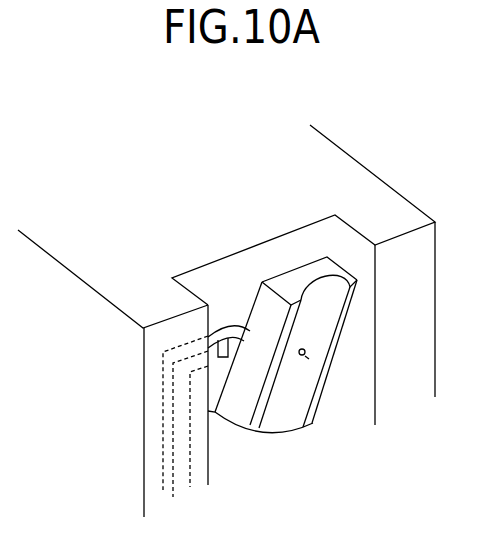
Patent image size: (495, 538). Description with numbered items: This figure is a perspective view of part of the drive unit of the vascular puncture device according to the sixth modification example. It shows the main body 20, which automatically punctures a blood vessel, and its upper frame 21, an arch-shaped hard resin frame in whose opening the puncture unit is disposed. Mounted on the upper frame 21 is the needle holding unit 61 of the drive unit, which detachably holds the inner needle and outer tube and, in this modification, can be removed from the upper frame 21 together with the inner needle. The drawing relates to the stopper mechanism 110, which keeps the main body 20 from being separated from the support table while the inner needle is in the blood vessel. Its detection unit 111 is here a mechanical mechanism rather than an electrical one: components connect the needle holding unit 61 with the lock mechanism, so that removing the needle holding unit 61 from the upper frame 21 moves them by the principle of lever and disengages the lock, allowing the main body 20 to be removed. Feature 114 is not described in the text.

The main body 20 is at (366, 197).
The upper frame 21 is at (112, 235).
The needle holding unit 61 is at (293, 284).
The stopper mechanism 110 is at (307, 350).
The detection unit 111 is at (306, 357).
The protrusion in groove 114 is at (216, 349).